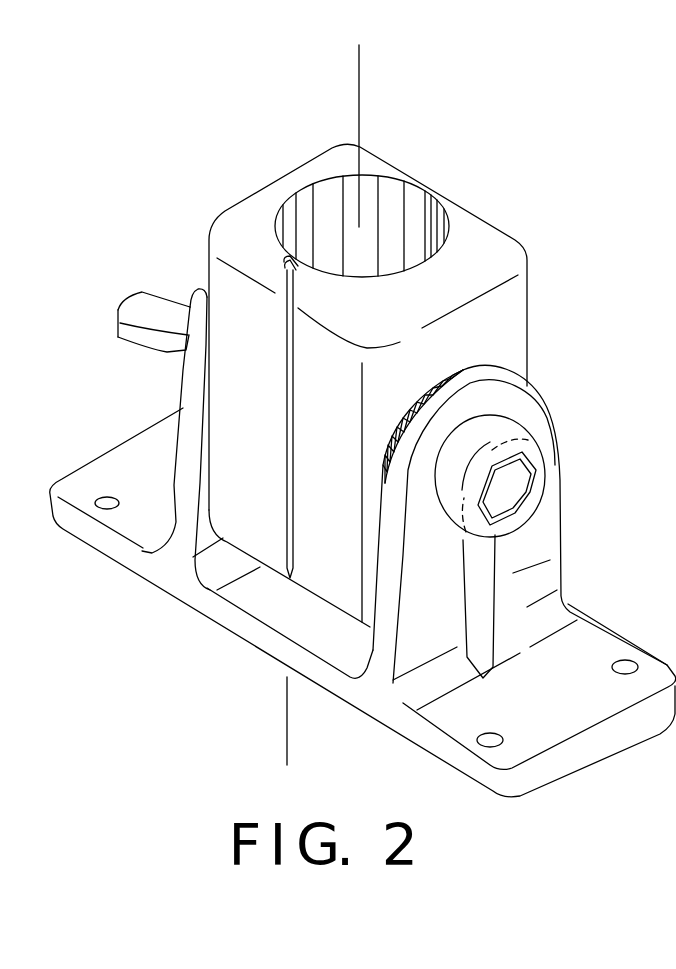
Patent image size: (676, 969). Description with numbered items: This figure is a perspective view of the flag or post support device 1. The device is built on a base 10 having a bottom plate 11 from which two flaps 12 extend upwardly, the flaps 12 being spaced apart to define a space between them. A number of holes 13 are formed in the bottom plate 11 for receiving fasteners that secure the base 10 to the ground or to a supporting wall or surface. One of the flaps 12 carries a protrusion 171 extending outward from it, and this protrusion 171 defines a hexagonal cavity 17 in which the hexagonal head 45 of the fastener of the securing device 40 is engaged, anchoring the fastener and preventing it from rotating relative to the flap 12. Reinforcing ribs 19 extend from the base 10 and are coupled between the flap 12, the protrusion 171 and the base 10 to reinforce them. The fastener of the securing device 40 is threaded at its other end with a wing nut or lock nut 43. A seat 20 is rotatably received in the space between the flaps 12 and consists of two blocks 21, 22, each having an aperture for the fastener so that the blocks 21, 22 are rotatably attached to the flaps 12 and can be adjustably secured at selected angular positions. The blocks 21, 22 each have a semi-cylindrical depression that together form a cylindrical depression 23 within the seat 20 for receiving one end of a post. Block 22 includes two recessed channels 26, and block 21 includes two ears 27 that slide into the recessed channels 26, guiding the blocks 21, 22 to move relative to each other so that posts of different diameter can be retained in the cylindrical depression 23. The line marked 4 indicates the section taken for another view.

The flag or post support device 1 is at (138, 141).
The section line 4 is at (355, 83).
The base 10 is at (363, 606).
The bottom plate 11 is at (257, 638).
The flaps 12 is at (377, 533).
The holes 13 is at (105, 500).
The hexagonal cavity 17 is at (529, 431).
The protrusion 171 is at (505, 483).
The reinforcing ribs 19 is at (513, 573).
The seat 20 is at (348, 372).
The block 21 is at (284, 190).
The block 22 is at (512, 265).
The cylindrical depression 23 is at (362, 213).
The recessed channels 26 is at (290, 258).
The ears 27 is at (285, 490).
The securing device 40 is at (155, 396).
The wing nut or lock nut 43 is at (137, 293).
The hexagonal head 45 is at (548, 450).